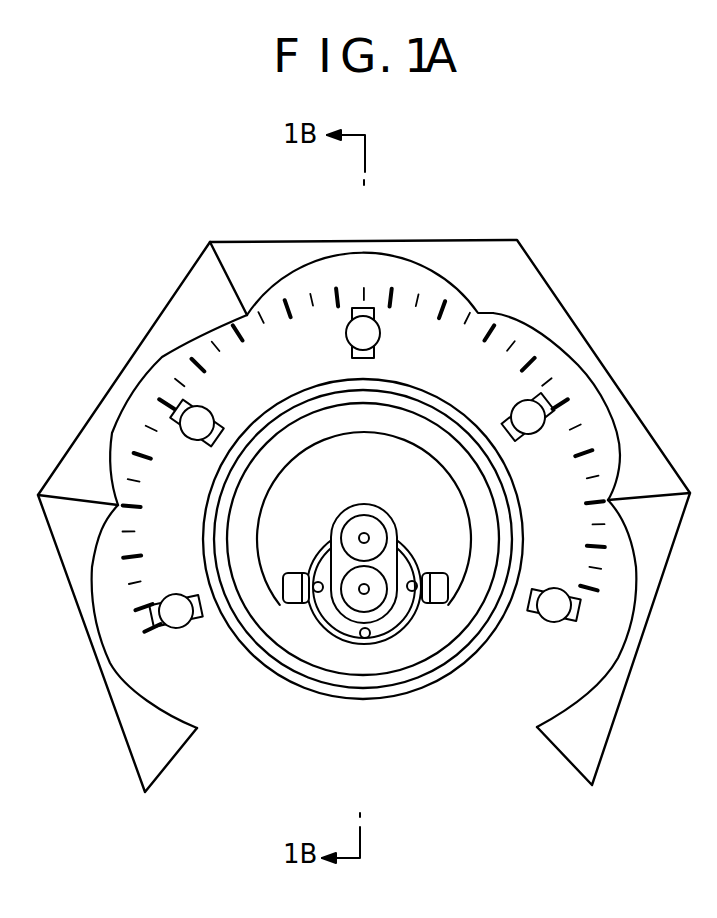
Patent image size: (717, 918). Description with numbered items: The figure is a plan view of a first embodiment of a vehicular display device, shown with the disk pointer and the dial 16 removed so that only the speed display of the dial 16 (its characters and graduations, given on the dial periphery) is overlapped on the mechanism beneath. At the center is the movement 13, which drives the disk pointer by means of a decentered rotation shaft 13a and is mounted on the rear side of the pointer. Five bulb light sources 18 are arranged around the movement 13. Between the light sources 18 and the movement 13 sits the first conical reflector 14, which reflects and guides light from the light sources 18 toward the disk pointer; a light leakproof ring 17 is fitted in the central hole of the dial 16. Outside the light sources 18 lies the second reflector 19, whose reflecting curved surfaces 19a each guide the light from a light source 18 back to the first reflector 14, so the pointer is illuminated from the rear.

The movement 13 is at (382, 633).
The decentered rotation shaft 13a is at (360, 540).
The first conical reflector 14 is at (453, 562).
The dial 16 is at (597, 658).
The light leakproof ring 17 is at (479, 427).
The bulb light source 18 is at (193, 420).
The second reflector 19 is at (647, 467).
The reflecting curved surface 19a is at (607, 389).